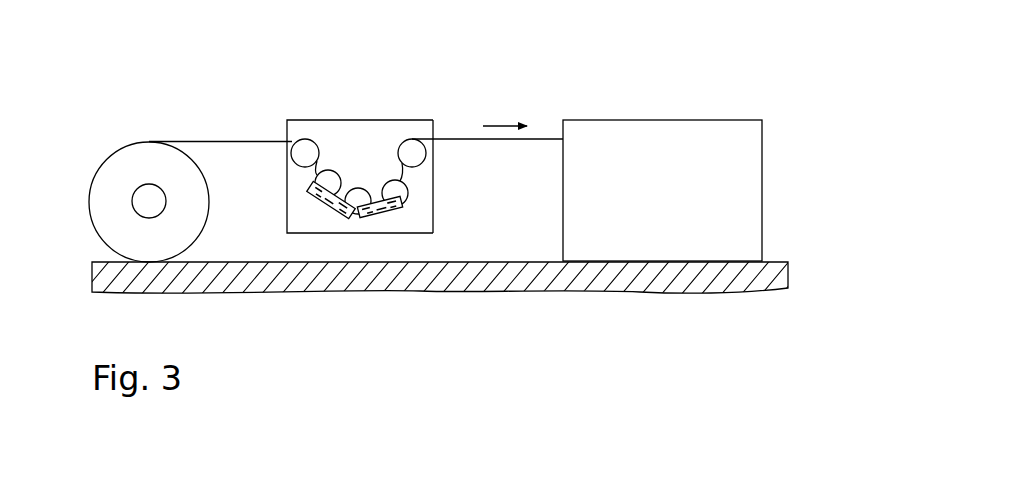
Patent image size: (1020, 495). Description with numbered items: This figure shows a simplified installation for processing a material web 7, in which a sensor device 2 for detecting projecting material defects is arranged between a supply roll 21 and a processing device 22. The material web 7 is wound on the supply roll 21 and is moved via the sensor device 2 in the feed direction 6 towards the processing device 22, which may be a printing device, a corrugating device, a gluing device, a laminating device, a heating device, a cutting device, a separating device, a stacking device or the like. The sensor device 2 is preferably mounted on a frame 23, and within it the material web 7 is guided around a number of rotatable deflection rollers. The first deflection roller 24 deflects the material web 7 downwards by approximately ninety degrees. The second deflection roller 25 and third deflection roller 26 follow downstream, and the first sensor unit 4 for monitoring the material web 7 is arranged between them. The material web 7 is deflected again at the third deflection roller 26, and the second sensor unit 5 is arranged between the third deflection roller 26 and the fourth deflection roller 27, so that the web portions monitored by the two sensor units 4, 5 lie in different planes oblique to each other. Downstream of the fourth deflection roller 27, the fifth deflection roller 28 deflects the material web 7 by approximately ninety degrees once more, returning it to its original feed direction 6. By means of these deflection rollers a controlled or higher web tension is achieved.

The sensor device 2 is at (283, 164).
The first sensor unit 4 is at (330, 219).
The second sensor unit 5 is at (395, 219).
The feed direction 6 is at (503, 123).
The material web 7 is at (212, 140).
The supply roll 21 is at (150, 147).
The processing device 22 is at (647, 129).
The frame 23 is at (427, 130).
The first deflection roller 24 is at (303, 145).
The second deflection roller 25 is at (315, 180).
The third deflection roller 26 is at (366, 188).
The fourth deflection roller 27 is at (410, 198).
The fifth deflection roller 28 is at (410, 147).